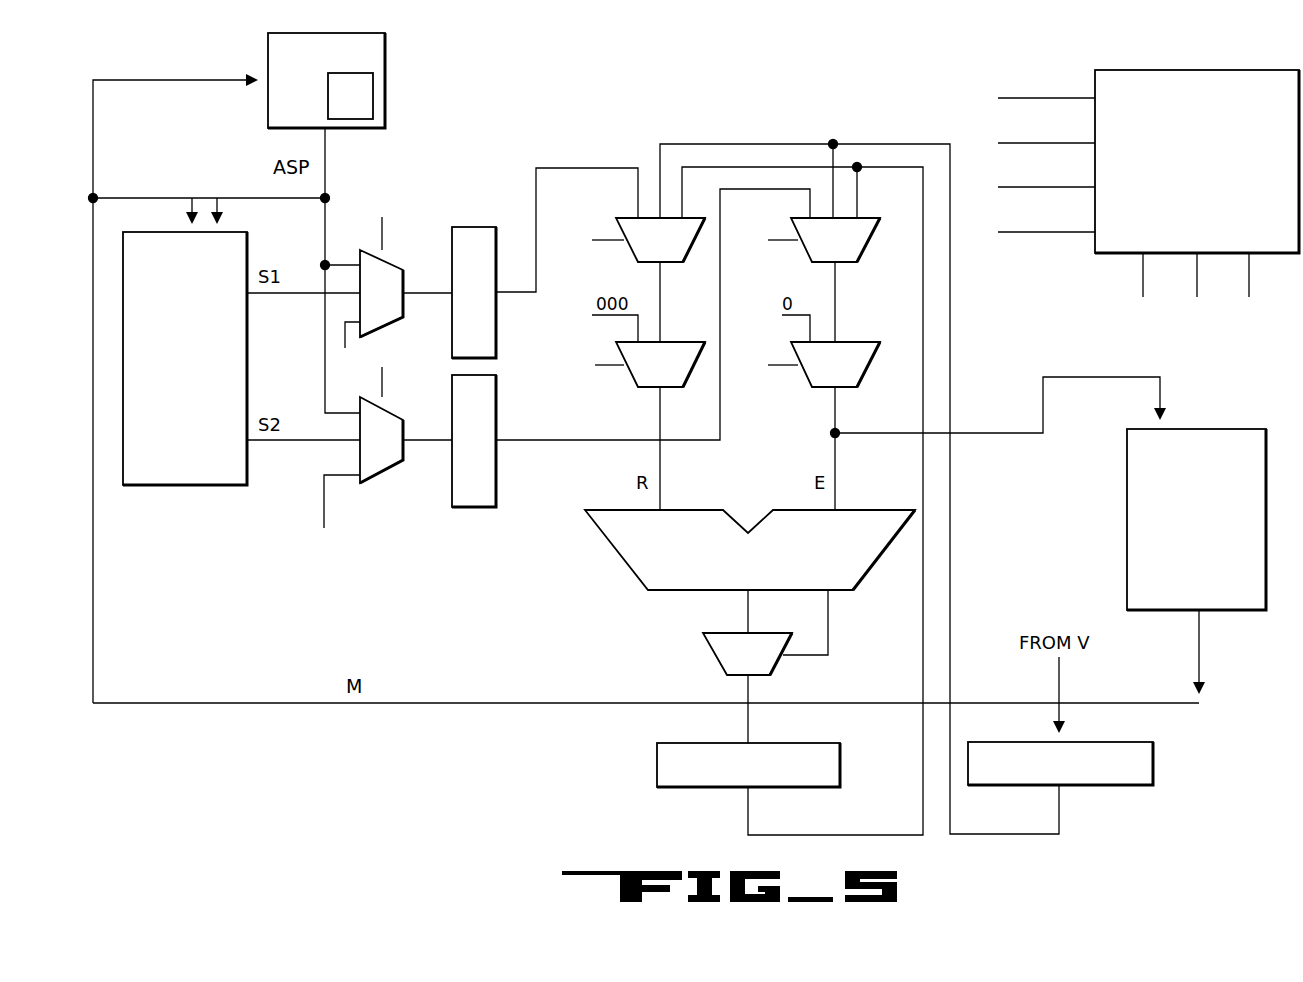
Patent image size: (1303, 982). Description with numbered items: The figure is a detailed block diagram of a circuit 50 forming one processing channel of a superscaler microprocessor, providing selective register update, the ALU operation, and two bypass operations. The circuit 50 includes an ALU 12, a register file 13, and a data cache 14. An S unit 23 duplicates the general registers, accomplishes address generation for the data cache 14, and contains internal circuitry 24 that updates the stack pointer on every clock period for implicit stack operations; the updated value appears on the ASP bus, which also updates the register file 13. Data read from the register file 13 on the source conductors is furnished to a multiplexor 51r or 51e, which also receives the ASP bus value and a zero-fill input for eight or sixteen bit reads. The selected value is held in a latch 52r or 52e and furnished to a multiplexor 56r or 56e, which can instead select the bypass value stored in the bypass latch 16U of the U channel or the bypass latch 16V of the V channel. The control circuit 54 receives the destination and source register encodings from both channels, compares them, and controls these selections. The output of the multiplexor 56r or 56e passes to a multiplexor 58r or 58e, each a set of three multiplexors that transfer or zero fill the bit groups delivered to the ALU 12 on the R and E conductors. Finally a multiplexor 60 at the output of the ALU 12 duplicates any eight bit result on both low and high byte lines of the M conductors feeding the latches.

The S unit 23 is at (300, 105).
The internal circuitry 24 is at (361, 105).
The register file 13 is at (226, 465).
The multiplexor 51r is at (369, 304).
The multiplexor 51e is at (368, 451).
The latch 52r is at (496, 338).
The latch 52e is at (496, 392).
The multiplexor 56r is at (647, 252).
The multiplexor 58r is at (647, 376).
The multiplexor 56e is at (821, 252).
The multiplexor 58e is at (821, 376).
The control circuit 54 is at (1257, 245).
The ALU 12 is at (812, 573).
The multiplexor 60 is at (737, 665).
The bypass latch 16U is at (823, 777).
The bypass latch 16V is at (1134, 776).
The data cache 14 is at (1226, 592).
The circuit 50 is at (427, 596).